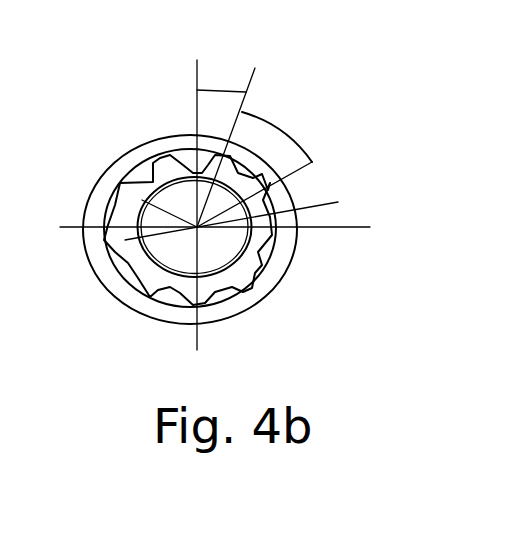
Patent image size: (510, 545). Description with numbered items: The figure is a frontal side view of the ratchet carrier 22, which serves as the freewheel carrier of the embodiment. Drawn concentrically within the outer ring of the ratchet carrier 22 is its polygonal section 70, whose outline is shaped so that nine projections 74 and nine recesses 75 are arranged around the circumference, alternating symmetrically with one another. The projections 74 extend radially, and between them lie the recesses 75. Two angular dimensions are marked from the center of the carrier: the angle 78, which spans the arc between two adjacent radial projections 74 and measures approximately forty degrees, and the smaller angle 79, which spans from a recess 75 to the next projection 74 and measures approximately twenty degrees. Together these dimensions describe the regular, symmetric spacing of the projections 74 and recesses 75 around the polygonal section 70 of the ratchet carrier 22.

The ratchet carrier 22 is at (137, 140).
The polygonal section 70 is at (283, 207).
The projections 74 is at (283, 236).
The recesses 75 is at (281, 256).
The angle between two radial projections 78 is at (288, 127).
The angle between a recess and the next projection 79 is at (220, 88).